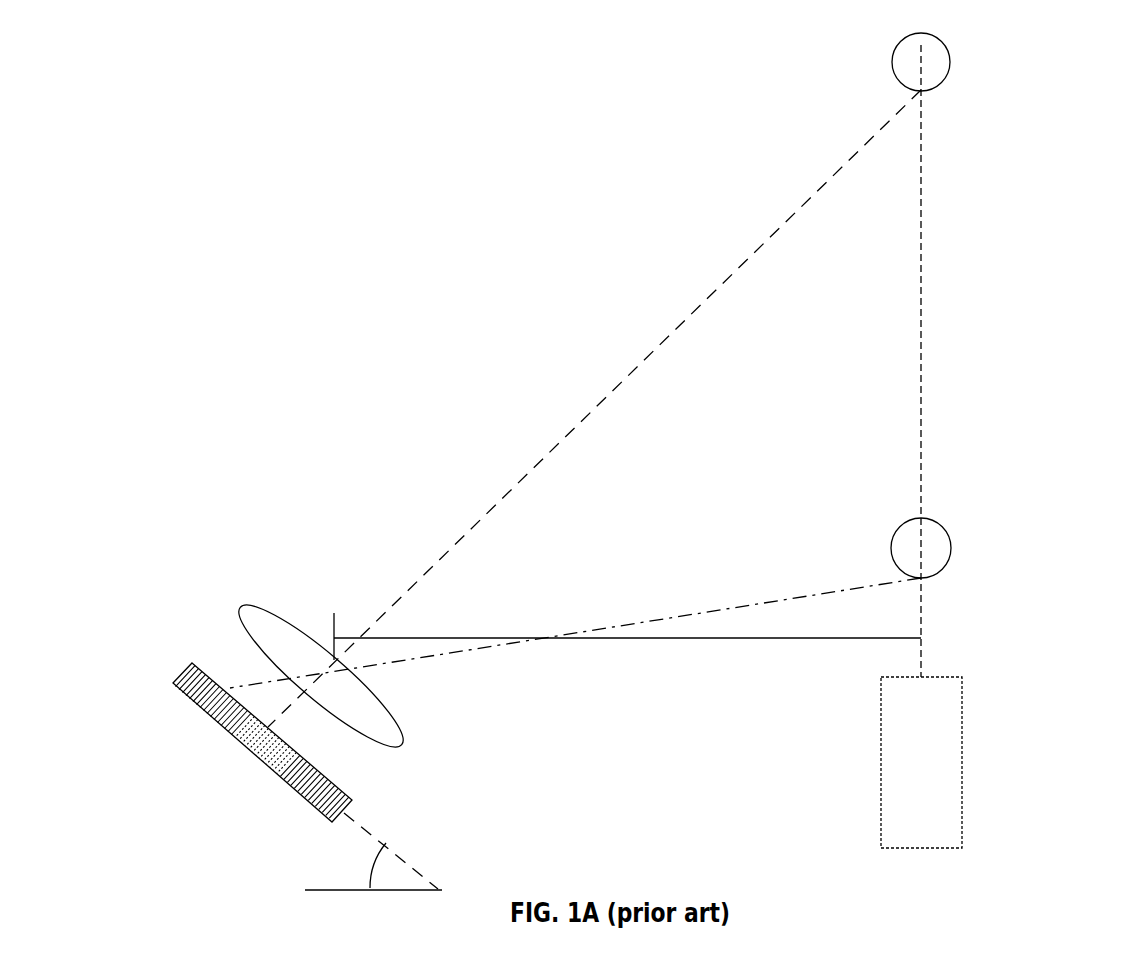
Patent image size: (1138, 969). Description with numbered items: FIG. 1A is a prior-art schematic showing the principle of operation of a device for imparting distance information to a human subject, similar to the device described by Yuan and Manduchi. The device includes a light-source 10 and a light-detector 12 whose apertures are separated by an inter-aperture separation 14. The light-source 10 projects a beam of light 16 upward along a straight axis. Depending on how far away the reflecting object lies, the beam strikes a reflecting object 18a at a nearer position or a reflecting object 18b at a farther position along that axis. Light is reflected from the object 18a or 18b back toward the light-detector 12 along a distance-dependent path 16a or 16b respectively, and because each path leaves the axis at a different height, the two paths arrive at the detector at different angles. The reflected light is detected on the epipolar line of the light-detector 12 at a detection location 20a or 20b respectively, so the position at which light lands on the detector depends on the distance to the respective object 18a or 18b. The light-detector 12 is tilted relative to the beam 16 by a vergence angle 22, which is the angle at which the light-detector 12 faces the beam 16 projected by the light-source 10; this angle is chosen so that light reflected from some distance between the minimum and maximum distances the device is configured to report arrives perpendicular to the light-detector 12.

The light-source 10 is at (962, 773).
The light-detector 12 is at (155, 606).
The inter-aperture separation 14 is at (680, 640).
The beam of light 16 is at (921, 318).
The distance-dependent path 16a is at (752, 605).
The distance-dependent path 16b is at (593, 410).
The reflecting object 18a is at (925, 578).
The reflecting object 18b is at (925, 90).
The detection location 20a is at (223, 688).
The detection location 20b is at (268, 727).
The vergence angle 22 is at (402, 875).